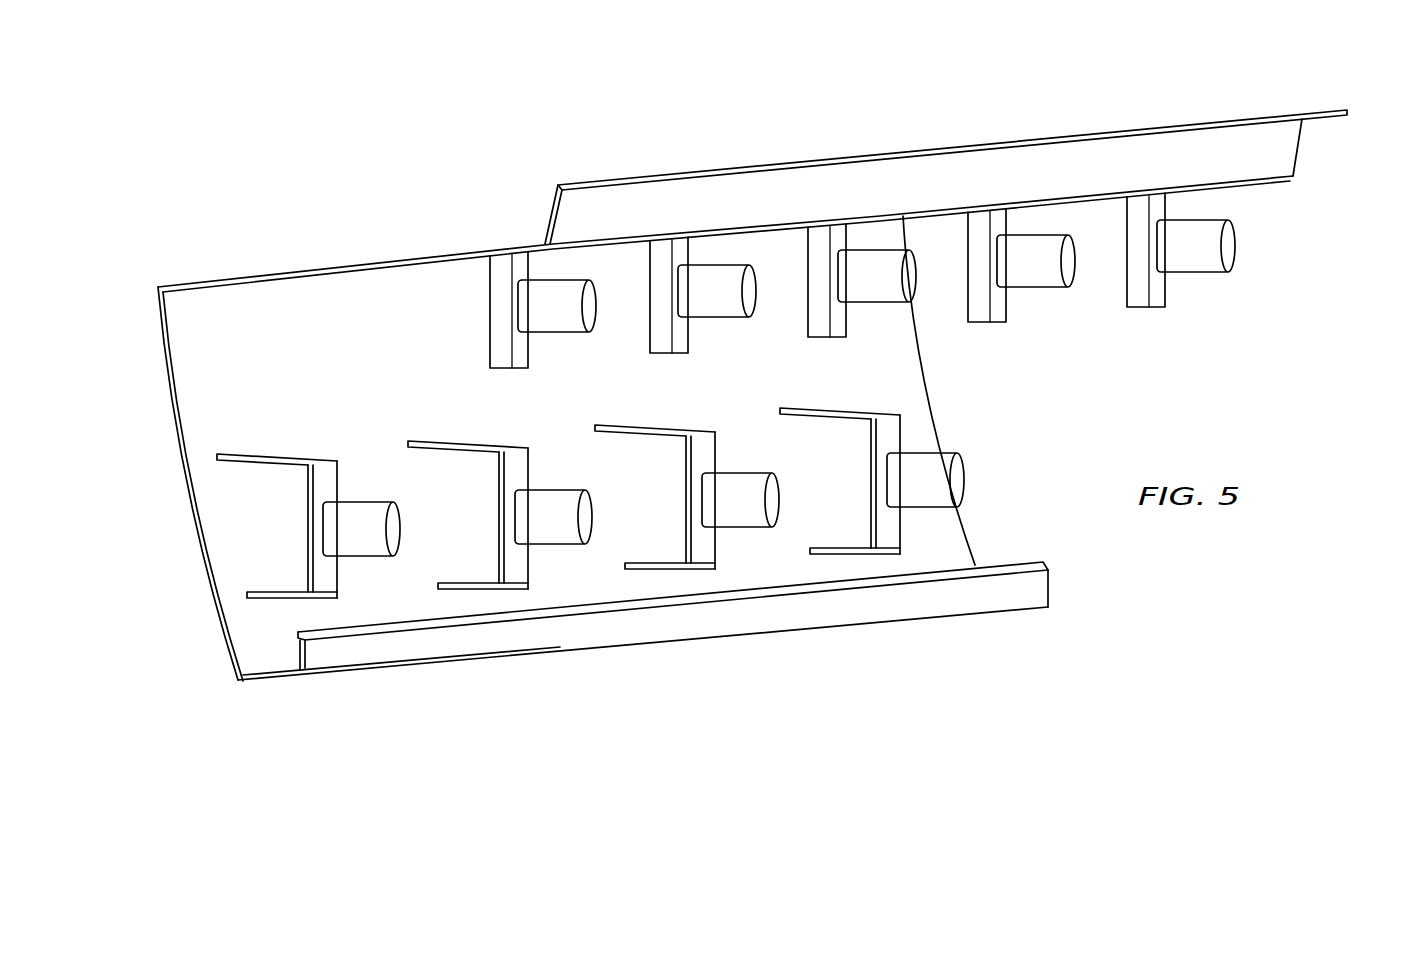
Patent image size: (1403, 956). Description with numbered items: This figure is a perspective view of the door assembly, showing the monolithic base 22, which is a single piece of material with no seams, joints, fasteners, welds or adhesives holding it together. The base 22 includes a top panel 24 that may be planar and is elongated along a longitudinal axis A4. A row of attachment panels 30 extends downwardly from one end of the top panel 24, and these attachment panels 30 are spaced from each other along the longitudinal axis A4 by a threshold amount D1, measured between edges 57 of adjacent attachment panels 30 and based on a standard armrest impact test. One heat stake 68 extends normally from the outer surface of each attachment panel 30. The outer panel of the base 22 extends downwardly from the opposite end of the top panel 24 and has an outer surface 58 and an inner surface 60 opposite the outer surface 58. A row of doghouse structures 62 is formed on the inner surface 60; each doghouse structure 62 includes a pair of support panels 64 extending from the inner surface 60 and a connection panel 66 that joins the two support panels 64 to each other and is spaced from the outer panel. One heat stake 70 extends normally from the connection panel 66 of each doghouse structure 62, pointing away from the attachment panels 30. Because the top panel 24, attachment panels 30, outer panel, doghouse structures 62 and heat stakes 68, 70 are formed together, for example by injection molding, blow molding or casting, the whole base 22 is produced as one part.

The monolithic base 22 is at (487, 96).
The top panel 24 is at (357, 262).
The attachment panel 30 is at (492, 330).
The edge 57 is at (514, 352).
The outer surface 58 is at (212, 344).
The inner surface 60 is at (349, 362).
The doghouse structure 62 is at (329, 459).
The support panel 64 is at (277, 455).
The connection panel 66 is at (330, 487).
The heat stake 68 is at (560, 296).
The heat stake 70 is at (362, 543).
The longitudinal axis A4 is at (1030, 56).
The threshold amount D1 is at (828, 388).